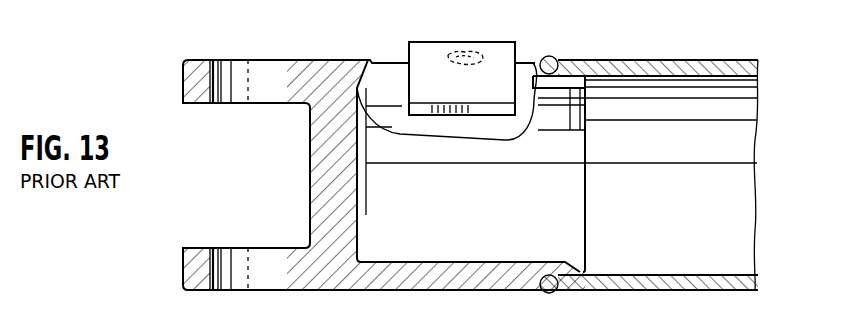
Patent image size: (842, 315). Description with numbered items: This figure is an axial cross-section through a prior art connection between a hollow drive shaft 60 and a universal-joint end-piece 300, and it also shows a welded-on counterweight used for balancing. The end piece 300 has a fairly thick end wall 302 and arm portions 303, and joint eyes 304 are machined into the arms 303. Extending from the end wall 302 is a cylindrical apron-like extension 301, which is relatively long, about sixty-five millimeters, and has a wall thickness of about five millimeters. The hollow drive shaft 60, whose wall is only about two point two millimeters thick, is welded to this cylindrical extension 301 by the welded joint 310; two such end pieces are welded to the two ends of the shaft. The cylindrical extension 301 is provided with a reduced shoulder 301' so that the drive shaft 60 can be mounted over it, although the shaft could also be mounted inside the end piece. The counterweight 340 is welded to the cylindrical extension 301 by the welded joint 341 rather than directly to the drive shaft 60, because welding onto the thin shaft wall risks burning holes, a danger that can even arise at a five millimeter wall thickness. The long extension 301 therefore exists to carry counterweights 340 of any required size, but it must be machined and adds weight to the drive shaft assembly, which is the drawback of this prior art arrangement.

The universal-joint end-piece 300 is at (346, 50).
The cylindrical apron-like extension 301 is at (471, 189).
The reduced shoulder 301' is at (583, 175).
The end wall 302 is at (323, 190).
The arm portions 303 is at (193, 98).
The joint eyes 304 is at (258, 93).
The welded joint 310 is at (552, 57).
The counterweight 340 is at (445, 28).
The welded joint 341 is at (476, 50).
The hollow drive shaft 60 is at (700, 58).